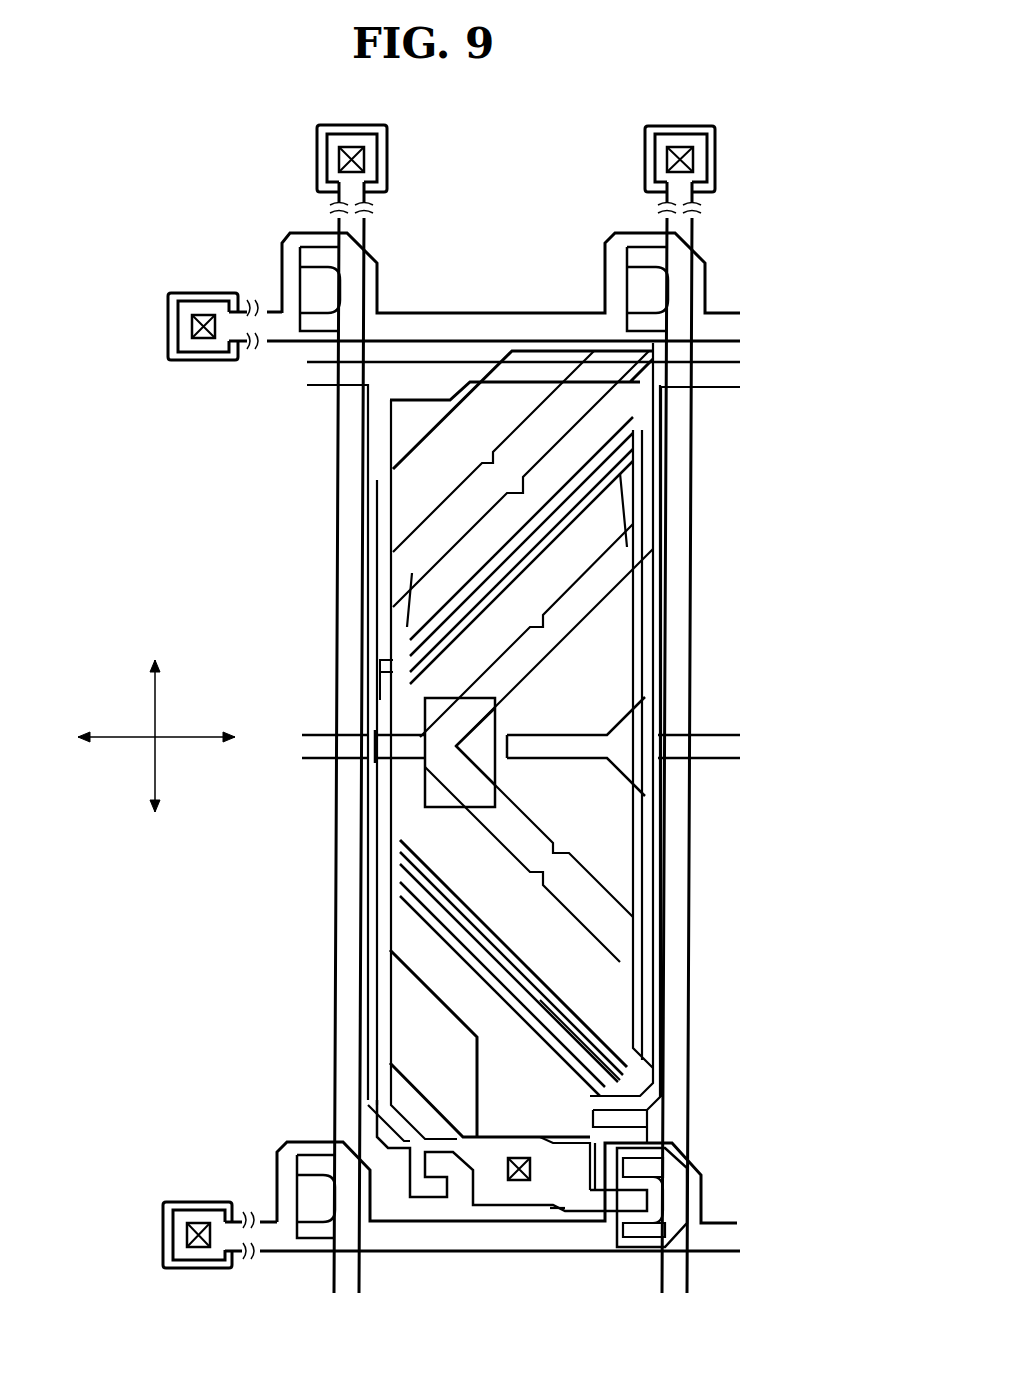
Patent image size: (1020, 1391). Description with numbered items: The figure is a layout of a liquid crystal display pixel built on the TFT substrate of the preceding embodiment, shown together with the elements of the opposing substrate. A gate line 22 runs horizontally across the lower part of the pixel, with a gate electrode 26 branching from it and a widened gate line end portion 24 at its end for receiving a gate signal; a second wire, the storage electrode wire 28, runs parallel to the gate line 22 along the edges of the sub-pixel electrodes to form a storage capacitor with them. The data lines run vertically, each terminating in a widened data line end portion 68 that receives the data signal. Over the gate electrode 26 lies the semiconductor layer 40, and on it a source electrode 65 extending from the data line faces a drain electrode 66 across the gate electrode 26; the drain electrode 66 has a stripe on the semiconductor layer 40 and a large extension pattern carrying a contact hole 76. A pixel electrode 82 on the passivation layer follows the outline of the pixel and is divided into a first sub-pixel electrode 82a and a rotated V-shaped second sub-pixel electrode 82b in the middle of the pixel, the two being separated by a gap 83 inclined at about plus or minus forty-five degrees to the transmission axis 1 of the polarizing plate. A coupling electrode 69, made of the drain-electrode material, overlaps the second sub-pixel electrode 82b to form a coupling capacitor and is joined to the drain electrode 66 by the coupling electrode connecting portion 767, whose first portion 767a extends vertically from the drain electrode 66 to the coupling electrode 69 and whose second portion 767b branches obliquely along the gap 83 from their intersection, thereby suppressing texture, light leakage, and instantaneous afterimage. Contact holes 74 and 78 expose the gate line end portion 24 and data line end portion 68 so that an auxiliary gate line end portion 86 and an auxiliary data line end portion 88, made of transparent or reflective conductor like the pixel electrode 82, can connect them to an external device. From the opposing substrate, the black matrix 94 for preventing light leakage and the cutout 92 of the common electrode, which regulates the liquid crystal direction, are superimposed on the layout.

The transmission axis 1 is at (100, 672).
The gate line 22 is at (405, 1256).
The gate line end portion 24 is at (182, 1207).
The gate electrode 26 is at (700, 1152).
The storage electrode wire 28 is at (313, 386).
The semiconductor layer 40 is at (700, 1192).
The source electrode 65 is at (640, 1249).
The drain electrode 66 is at (548, 1212).
The data line end portion 68 is at (668, 128).
The coupling electrode 69 is at (497, 714).
The contact hole 74 is at (190, 1233).
The contact hole 76 is at (520, 1182).
The contact hole 78 is at (668, 157).
The pixel electrode 82 is at (762, 484).
The first sub-pixel electrode 82a is at (555, 517).
The second sub-pixel electrode 82b is at (600, 490).
The gap 83 is at (550, 977).
The auxiliary gate line end portion 86 is at (183, 1270).
The auxiliary data line end portion 88 is at (712, 130).
The cutout 92 is at (437, 500).
The black matrix 94 is at (395, 676).
The coupling electrode connecting portion 767 is at (270, 926).
The first portion 767a is at (455, 957).
The second portion 767b is at (430, 880).